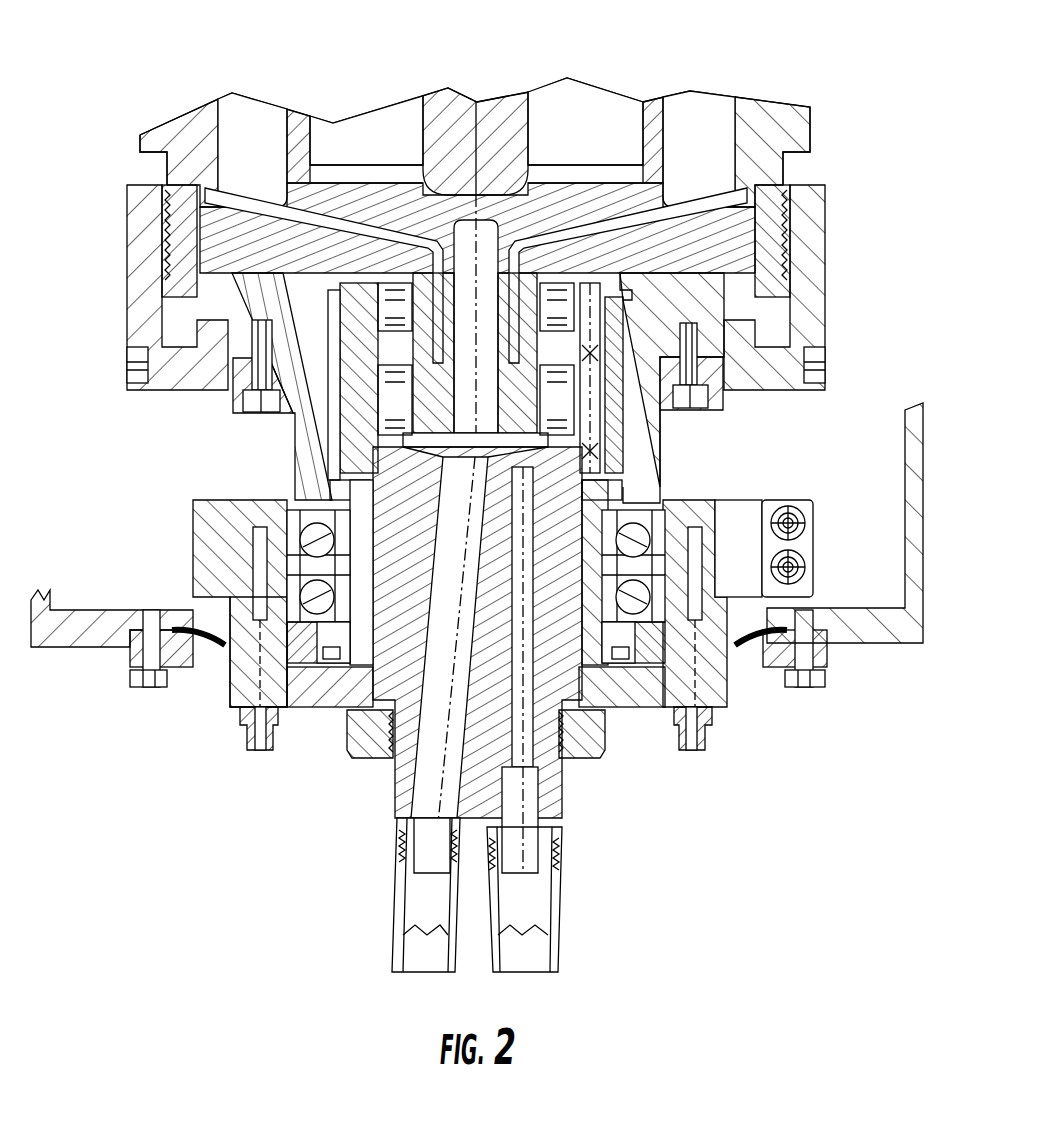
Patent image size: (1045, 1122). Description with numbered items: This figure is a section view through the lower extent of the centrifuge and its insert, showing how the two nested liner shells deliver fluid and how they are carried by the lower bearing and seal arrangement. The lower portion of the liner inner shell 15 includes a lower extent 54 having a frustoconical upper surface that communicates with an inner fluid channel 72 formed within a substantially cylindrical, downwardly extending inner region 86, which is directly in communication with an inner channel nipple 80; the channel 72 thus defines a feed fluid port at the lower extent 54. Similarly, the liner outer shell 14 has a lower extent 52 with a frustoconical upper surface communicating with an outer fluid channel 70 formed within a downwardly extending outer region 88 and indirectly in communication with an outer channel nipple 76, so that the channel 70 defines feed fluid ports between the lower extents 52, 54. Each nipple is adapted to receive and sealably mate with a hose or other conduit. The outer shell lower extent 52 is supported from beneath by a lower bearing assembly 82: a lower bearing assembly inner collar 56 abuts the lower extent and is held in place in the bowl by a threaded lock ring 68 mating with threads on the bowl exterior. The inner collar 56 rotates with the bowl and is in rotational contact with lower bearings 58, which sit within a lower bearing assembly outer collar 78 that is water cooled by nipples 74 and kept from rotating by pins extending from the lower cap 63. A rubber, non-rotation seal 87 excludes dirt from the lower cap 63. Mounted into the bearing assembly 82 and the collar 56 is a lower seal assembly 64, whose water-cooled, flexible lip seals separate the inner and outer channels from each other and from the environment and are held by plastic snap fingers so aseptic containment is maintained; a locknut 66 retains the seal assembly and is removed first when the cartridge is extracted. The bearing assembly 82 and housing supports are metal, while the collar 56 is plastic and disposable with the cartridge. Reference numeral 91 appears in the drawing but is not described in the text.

The liner outer shell 14 is at (757, 133).
The liner inner shell 15 is at (668, 138).
The outer shell lower extent 52 is at (712, 212).
The inner shell lower extent 54 is at (570, 198).
The lower bearing assembly inner collar 56 is at (290, 428).
The lower bearings 58 is at (290, 583).
The lower cap 63 is at (928, 596).
The lower seal assembly 64 is at (350, 428).
The locknut 66 is at (357, 758).
The threaded lock ring 68 is at (828, 328).
The outer fluid channel 70 is at (588, 393).
The inner fluid channel 72 is at (472, 265).
The nipples 74 is at (258, 752).
The outer channel nipple 76 is at (556, 848).
The lower bearing assembly outer collar 78 is at (232, 673).
The inner channel nipple 80 is at (405, 861).
The lower bearing assembly 82 is at (250, 500).
The inner region 86 is at (465, 507).
The non-rotation seal 87 is at (746, 648).
The outer region 88 is at (538, 718).
The seal 91 is at (634, 293).